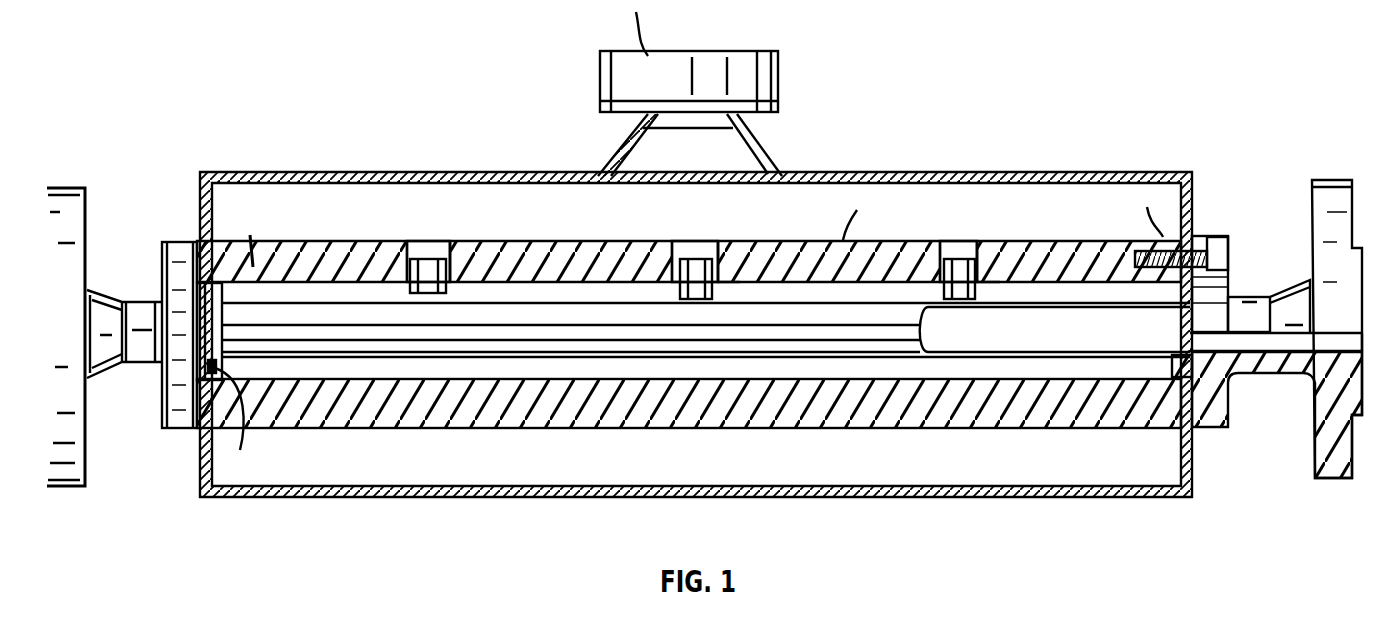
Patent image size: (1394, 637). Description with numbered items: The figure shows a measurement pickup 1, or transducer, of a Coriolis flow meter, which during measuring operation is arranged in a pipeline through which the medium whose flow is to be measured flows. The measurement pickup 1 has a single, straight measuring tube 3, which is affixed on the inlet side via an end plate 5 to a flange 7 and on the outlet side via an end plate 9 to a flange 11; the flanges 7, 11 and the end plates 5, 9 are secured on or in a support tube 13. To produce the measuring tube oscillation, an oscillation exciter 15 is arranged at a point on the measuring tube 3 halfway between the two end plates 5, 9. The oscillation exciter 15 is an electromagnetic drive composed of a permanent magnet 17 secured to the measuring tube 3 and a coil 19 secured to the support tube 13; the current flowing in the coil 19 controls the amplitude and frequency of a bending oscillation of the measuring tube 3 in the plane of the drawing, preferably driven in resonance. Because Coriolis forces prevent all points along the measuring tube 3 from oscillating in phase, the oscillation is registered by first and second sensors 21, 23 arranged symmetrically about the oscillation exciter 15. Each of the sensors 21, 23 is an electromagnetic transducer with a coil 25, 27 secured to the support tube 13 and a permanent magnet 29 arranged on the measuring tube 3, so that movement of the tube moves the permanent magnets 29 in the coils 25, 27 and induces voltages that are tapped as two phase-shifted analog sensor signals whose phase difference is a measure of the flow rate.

The measurement pickup 1 is at (916, 86).
The measuring tube 3 is at (356, 337).
The end plate 5 is at (205, 308).
The flange 7 is at (68, 190).
The end plate 9 is at (1172, 318).
The flange 11 is at (1350, 476).
The support tube 13 is at (442, 412).
The oscillation exciter 15 is at (693, 241).
The permanent magnet 17 is at (730, 270).
The coil 19 is at (686, 265).
The first sensor 21 is at (429, 240).
The second sensor 23 is at (468, 258).
The coil 25 is at (410, 286).
The coil 27 is at (947, 263).
The permanent magnet 29 is at (983, 267).